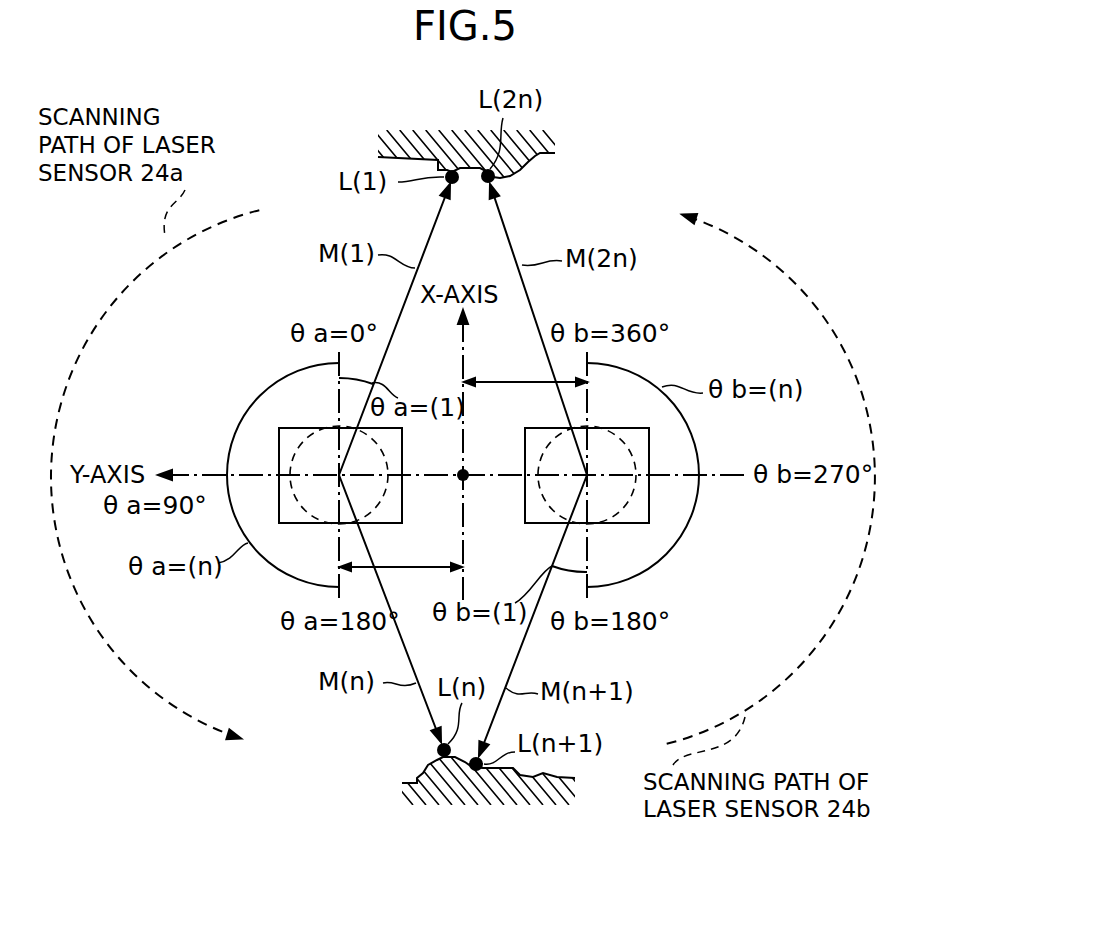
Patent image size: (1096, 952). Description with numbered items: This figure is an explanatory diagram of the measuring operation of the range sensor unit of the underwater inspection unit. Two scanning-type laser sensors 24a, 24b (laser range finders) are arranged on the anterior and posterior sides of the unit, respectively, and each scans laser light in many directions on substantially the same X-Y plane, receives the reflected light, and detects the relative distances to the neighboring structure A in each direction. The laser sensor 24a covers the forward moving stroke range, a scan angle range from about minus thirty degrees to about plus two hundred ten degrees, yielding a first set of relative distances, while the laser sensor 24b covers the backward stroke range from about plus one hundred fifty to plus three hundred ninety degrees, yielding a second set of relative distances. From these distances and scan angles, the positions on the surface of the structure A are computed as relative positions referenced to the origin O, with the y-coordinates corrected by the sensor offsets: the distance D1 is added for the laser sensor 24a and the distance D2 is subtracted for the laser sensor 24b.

The laser sensor 24a is at (279, 443).
The laser sensor 24b is at (649, 508).
The neighboring structure A is at (528, 170).
The origin O is at (473, 488).
The offset distance D1 is at (401, 552).
The offset distance D2 is at (525, 367).